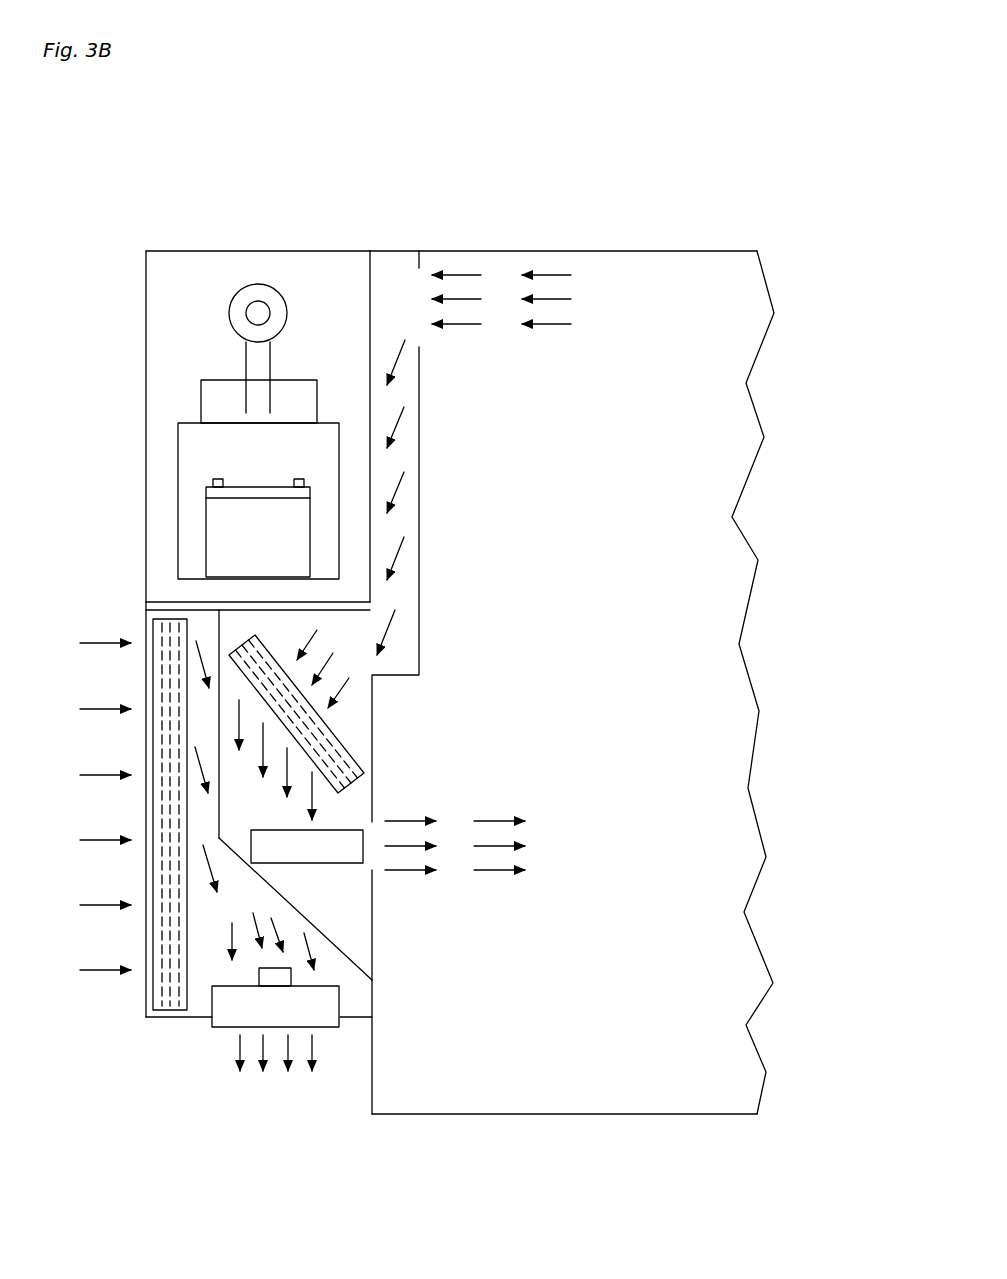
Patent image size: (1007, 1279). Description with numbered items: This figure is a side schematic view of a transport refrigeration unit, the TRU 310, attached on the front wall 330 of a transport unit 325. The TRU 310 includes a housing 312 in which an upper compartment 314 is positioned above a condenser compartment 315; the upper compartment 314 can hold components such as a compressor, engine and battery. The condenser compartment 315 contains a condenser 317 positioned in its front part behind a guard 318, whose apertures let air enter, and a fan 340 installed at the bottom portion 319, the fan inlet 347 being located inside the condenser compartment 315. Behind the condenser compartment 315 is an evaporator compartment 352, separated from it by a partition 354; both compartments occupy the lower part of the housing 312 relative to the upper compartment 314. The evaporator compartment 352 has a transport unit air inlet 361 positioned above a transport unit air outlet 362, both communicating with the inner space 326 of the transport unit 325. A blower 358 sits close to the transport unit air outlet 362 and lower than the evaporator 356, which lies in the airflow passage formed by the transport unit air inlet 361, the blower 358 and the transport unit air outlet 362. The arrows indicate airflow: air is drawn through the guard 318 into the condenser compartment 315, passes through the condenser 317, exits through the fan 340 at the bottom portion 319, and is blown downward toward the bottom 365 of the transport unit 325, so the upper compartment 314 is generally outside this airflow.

The TRU 310 is at (220, 250).
The housing 312 is at (145, 478).
The upper compartment 314 is at (145, 370).
The condenser compartment 315 is at (145, 623).
The condenser 317 is at (167, 758).
The guard 318 is at (146, 818).
The bottom portion 319 is at (192, 1018).
The transport unit 325 is at (653, 248).
The inner space 326 is at (703, 559).
The front wall 330 is at (372, 1090).
The fans 340 is at (225, 1027).
The inlet 347 is at (220, 983).
The evaporator compartment 352 is at (372, 928).
The partition 354 is at (362, 972).
The evaporator 356 is at (333, 750).
The blower 358 is at (350, 827).
The transport unit air inlet 361 is at (418, 288).
The transport unit air outlet 362 is at (373, 842).
The bottom 365 is at (447, 1114).